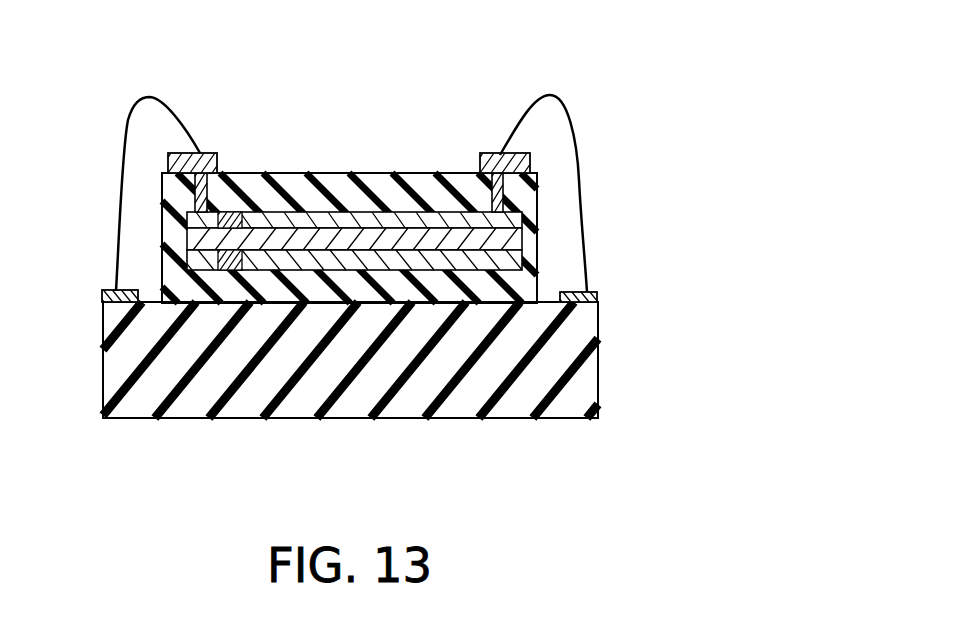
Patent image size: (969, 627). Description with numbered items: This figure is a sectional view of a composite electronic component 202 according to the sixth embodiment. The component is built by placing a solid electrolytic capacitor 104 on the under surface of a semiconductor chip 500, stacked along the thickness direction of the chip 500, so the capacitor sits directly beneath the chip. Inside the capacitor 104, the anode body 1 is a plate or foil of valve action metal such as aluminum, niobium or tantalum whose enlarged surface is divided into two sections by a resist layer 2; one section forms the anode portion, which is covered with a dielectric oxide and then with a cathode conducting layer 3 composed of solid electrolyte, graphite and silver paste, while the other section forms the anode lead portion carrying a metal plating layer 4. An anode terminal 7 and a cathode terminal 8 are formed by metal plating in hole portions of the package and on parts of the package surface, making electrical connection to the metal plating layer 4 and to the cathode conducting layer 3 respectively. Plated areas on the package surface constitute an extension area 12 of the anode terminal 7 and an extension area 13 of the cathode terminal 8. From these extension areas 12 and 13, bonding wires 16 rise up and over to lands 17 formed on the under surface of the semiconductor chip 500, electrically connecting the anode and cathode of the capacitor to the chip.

The semiconductor chip 500 is at (363, 395).
The composite electronic component 202 is at (417, 150).
The solid electrolytic capacitor 104 is at (363, 173).
The anode body 1 is at (305, 237).
The resist layer 2 is at (233, 213).
The cathode conducting layer 3 is at (392, 220).
The metal plating layer 4 is at (197, 220).
The anode terminal 7 is at (222, 173).
The cathode terminal 8 is at (490, 178).
The extension area of the anode terminal 12 is at (202, 153).
The extension area of the cathode terminal 13 is at (491, 163).
The bonding wire 16 is at (116, 231).
The land 17 is at (103, 290).